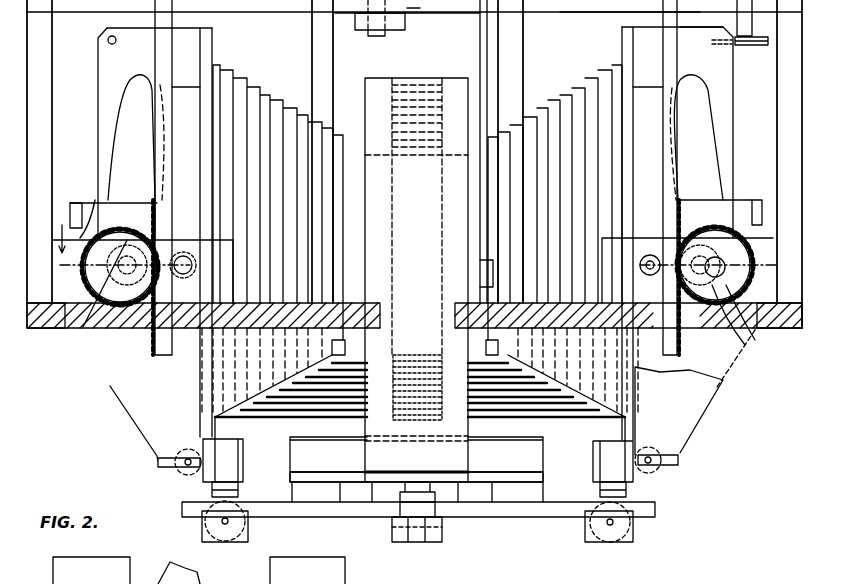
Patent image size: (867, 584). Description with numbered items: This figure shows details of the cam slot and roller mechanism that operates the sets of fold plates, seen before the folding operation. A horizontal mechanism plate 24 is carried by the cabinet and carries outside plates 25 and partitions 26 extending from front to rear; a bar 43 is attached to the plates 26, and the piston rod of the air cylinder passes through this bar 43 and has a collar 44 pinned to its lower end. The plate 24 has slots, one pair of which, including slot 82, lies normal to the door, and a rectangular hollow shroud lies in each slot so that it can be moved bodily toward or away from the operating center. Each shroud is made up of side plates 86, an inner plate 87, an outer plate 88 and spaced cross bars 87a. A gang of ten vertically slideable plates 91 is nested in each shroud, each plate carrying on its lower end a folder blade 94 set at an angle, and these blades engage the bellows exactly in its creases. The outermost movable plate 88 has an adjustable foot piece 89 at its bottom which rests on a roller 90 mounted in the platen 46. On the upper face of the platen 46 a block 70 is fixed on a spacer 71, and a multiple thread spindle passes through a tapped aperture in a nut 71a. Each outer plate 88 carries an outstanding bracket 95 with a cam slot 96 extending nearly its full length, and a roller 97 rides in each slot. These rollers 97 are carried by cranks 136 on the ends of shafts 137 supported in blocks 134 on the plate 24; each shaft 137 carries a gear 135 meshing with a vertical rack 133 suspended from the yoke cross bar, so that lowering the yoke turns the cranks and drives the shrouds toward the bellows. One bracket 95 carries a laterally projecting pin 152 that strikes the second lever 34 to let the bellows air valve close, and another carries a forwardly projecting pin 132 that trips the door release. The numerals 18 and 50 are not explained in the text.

The shaft 18 is at (183, 252).
The horizontal mechanism plate 24 is at (785, 303).
The outside plates 25 is at (45, 103).
The partitions 26 is at (312, 44).
The second lever 34 is at (745, 16).
The bar 43 is at (437, 12).
The collar 44 is at (402, 30).
The platen 46 is at (660, 507).
The top rail 50 is at (620, 12).
The block 70 is at (300, 462).
The spacer 71 is at (540, 476).
The nut 71a is at (297, 490).
The slot 82 is at (454, 308).
The side plates 86 is at (130, 405).
The inner plate 87 is at (339, 135).
The cross bars 87a is at (75, 203).
The outer plate 88 is at (630, 43).
The adjustable foot piece 89 is at (212, 498).
The roller 90 is at (250, 528).
The vertically slideable plates 91 is at (268, 92).
The folder blade 94 is at (300, 418).
The bracket 95 is at (105, 57).
The cam slot 96 is at (128, 92).
The roller 97 is at (138, 203).
The forwardly projecting pin 132 is at (107, 36).
The vertical rack 133 is at (157, 352).
The blocks 134 is at (66, 305).
The gear 135 is at (93, 200).
The cranks 136 is at (83, 330).
The shafts 137 is at (752, 330).
The laterally projecting pin 152 is at (744, 44).